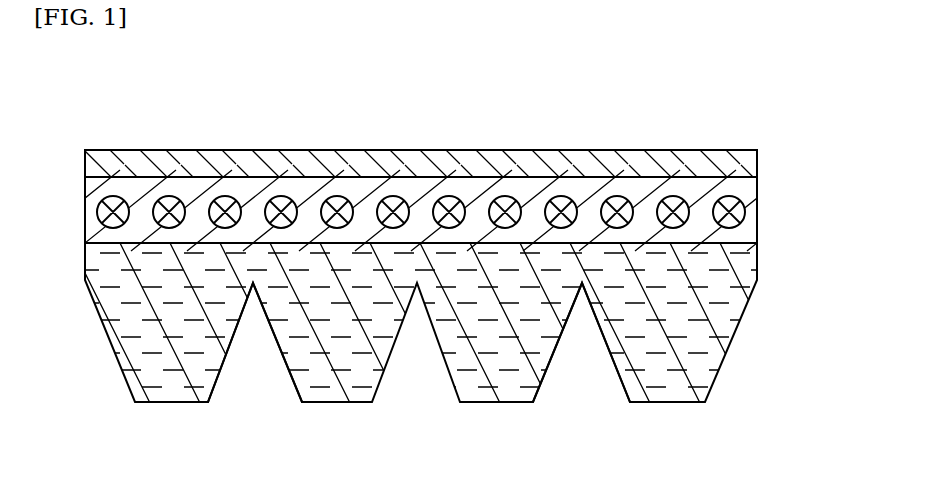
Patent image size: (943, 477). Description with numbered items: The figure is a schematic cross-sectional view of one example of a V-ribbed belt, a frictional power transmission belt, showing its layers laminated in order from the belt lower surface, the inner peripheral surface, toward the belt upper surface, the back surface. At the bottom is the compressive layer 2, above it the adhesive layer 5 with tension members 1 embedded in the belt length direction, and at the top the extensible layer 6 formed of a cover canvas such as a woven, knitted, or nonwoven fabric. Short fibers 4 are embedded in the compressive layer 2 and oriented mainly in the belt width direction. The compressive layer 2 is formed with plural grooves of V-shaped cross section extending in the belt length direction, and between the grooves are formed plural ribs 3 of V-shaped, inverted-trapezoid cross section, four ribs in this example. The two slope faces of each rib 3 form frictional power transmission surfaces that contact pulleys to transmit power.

The tension members 1 is at (333, 198).
The compressive layer 2 is at (737, 293).
The ribs 3 is at (320, 403).
The short fibers 4 is at (215, 305).
The adhesive layer 5 is at (757, 189).
The extensible layer 6 is at (440, 158).